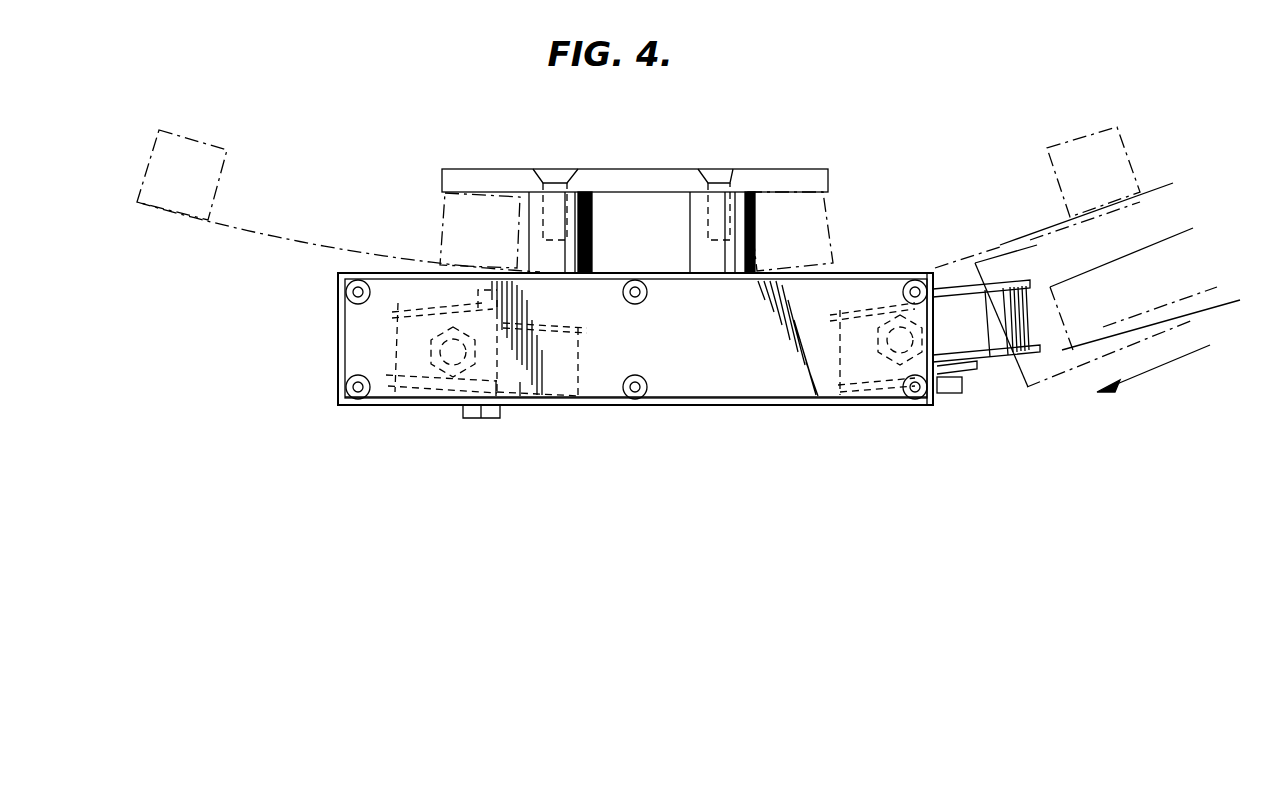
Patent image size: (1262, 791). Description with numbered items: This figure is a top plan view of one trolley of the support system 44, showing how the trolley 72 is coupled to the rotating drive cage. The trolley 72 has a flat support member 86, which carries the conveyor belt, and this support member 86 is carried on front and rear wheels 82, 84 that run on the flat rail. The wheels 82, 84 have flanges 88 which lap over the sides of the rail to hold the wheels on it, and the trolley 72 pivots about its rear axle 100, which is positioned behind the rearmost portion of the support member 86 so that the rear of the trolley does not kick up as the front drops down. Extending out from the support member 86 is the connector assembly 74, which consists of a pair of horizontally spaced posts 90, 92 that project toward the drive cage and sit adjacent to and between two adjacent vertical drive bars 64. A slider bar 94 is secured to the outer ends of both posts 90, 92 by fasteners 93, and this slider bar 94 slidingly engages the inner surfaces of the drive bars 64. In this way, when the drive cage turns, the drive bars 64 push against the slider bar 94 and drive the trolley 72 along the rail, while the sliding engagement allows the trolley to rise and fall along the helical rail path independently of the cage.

The support system 44 is at (405, 459).
The drive bars 64 is at (823, 234).
The trolley 72 is at (859, 428).
The connector assembly 74 is at (656, 150).
The front wheels 82 is at (577, 357).
The rear wheels 84 is at (980, 345).
The support member 86 is at (715, 388).
The flanges 88 is at (1015, 283).
The post 90 is at (592, 260).
The post 92 is at (697, 231).
The fasteners 93 is at (722, 166).
The slider bar 94 is at (812, 176).
The rear axle 100 is at (958, 395).